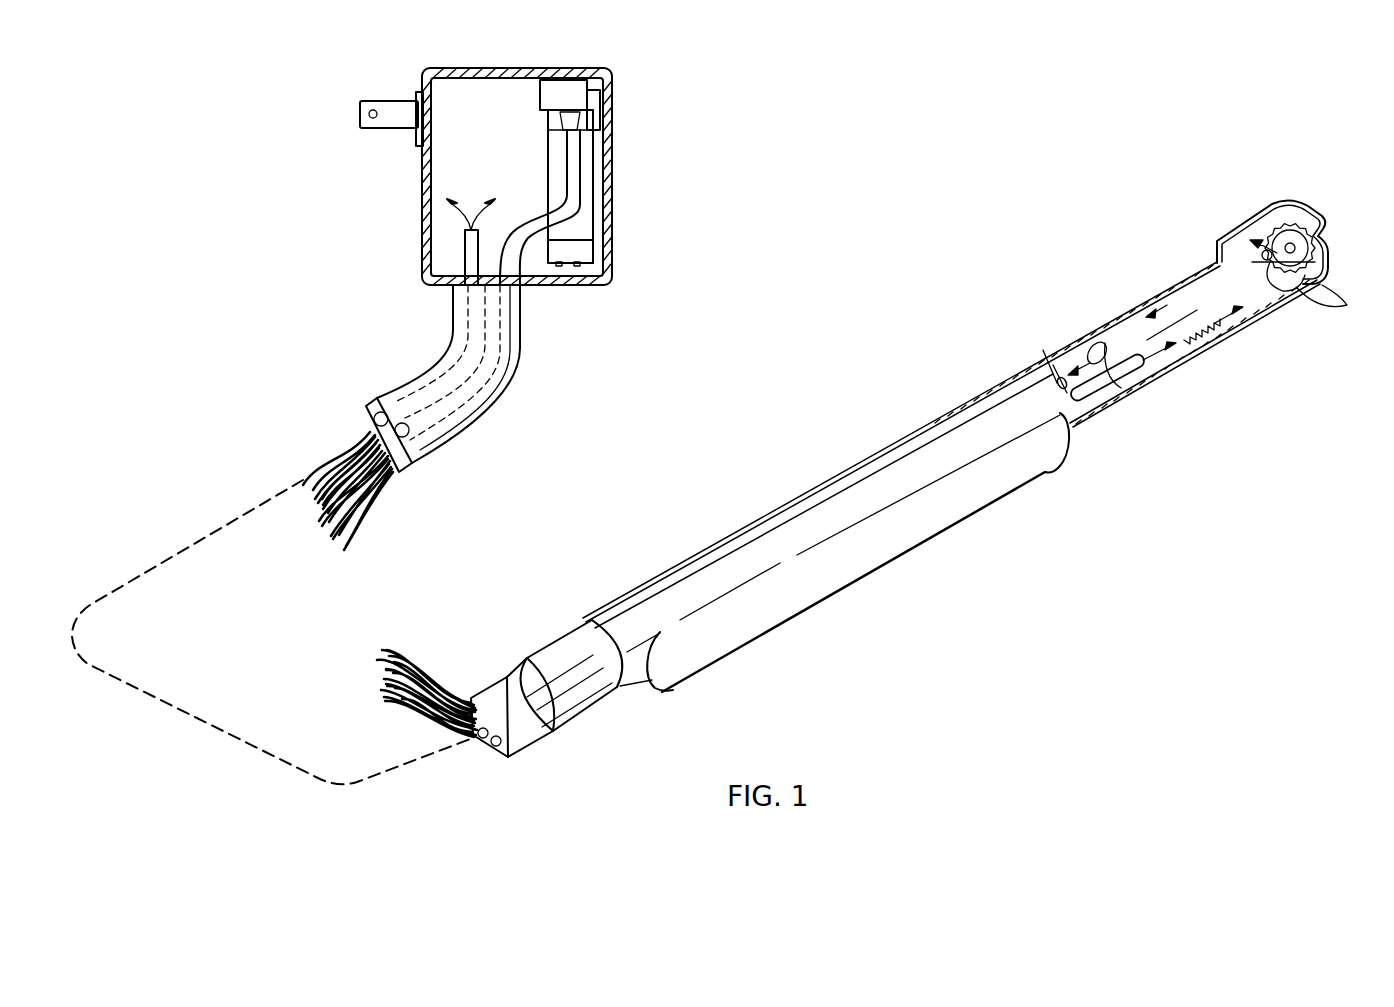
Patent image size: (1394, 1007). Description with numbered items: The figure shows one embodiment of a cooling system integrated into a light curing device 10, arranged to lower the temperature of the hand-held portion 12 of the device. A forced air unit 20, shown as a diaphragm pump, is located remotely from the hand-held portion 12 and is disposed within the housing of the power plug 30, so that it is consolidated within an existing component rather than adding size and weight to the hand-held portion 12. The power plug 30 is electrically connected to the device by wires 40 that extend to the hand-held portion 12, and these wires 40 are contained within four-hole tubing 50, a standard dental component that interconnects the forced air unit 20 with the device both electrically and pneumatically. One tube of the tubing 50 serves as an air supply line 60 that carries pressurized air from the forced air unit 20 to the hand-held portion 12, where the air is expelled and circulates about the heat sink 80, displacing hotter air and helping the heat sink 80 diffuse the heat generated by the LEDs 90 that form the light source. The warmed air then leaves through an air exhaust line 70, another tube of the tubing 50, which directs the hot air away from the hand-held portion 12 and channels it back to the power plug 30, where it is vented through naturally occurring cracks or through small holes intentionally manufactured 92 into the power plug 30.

The light curing device 10 is at (857, 601).
The hand-held portion 12 is at (972, 488).
The forced air unit 20 is at (605, 186).
The power plug 30 is at (557, 72).
The wires 40 is at (392, 502).
The four-hole tubing 50 is at (500, 396).
The air supply line 60 is at (530, 213).
The air exhaust line 70 is at (460, 265).
The heat sink 80 is at (1213, 321).
The LEDs 90 is at (1335, 304).
The intentionally manufactured holes 92 is at (610, 110).